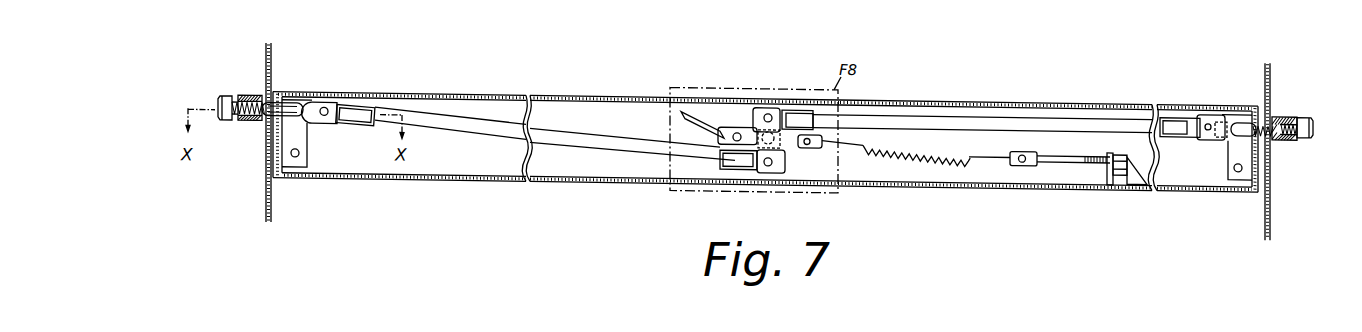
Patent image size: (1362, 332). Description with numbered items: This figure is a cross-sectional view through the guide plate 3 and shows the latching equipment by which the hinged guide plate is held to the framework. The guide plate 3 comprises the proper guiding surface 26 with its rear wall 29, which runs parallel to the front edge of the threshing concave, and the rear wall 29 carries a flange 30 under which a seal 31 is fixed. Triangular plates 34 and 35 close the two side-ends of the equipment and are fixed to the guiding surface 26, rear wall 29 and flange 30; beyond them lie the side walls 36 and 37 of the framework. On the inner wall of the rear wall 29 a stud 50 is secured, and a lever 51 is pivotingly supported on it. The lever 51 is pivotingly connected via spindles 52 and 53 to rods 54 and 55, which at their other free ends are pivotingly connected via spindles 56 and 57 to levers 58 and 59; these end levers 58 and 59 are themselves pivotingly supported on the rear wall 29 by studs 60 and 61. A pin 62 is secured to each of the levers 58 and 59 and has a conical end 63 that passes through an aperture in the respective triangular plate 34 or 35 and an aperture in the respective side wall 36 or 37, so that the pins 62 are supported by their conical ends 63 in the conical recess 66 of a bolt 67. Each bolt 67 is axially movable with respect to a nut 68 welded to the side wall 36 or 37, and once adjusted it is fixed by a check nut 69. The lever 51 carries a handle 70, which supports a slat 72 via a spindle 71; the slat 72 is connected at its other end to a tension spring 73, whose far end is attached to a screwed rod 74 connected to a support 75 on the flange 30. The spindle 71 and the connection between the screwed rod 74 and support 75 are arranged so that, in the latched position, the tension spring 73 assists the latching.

The guide plate 3 is at (1036, 80).
The guiding surface 26 is at (936, 93).
The rear wall 29 is at (613, 96).
The flange 30 is at (437, 172).
The seal 31 is at (450, 177).
The triangular plate 34 is at (281, 160).
The triangular plate 35 is at (1258, 161).
The side wall 36 is at (266, 210).
The side wall 37 is at (1270, 208).
The stud 50 is at (775, 135).
The lever 51 is at (765, 101).
The spindle 52 is at (771, 107).
The spindle 53 is at (770, 160).
The rod 54 is at (567, 130).
The rod 55 is at (1073, 121).
The spindle 56 is at (333, 119).
The spindle 57 is at (1207, 110).
The lever 58 is at (308, 142).
The lever 59 is at (1228, 129).
The stud 60 is at (297, 158).
The stud 61 is at (1234, 155).
The pin 62 is at (302, 103).
The conical end 63 is at (284, 104).
The conical recess 66 is at (252, 122).
The bolt 67 is at (230, 123).
The nut 68 is at (252, 96).
The check nut 69 is at (230, 98).
The handle 70 is at (683, 113).
The spindle 71 is at (751, 122).
The slat 72 is at (822, 138).
The tension spring 73 is at (906, 145).
The screwed rod 74 is at (1066, 148).
The support 75 is at (1127, 173).